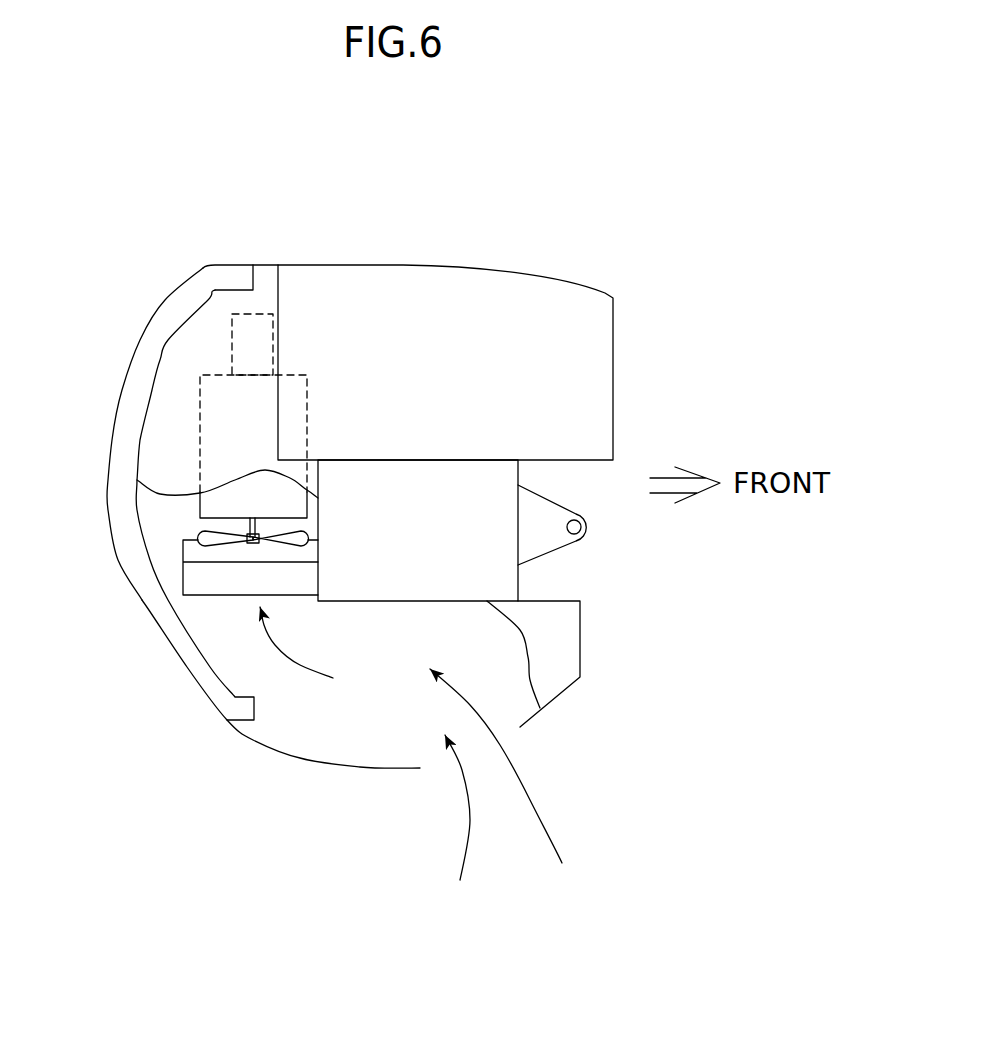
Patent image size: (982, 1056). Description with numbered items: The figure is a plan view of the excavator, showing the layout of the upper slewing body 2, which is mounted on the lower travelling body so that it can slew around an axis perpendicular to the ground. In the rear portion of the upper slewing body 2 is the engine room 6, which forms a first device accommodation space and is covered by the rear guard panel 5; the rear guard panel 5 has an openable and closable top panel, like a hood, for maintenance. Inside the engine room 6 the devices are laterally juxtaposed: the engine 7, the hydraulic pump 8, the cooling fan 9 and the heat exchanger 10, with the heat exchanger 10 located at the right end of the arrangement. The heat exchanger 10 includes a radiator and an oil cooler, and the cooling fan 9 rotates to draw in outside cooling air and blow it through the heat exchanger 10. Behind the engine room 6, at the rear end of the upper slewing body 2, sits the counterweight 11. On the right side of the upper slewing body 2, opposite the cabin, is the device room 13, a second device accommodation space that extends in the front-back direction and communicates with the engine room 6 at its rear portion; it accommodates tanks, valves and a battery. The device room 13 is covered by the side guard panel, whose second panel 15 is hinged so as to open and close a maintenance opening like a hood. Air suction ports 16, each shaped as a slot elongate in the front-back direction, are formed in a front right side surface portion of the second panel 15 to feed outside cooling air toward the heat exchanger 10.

The upper slewing body 2 is at (447, 257).
The rear guard panel 5 is at (152, 452).
The engine room 6 is at (158, 503).
The engine 7 is at (200, 443).
The hydraulic pump 8 is at (232, 350).
The cooling fan 9 is at (310, 536).
The heat exchanger 10 is at (183, 580).
The counterweight 11 is at (133, 363).
The device room 13 is at (330, 743).
The second panel 15 is at (570, 644).
The air suction ports 16 is at (443, 758).